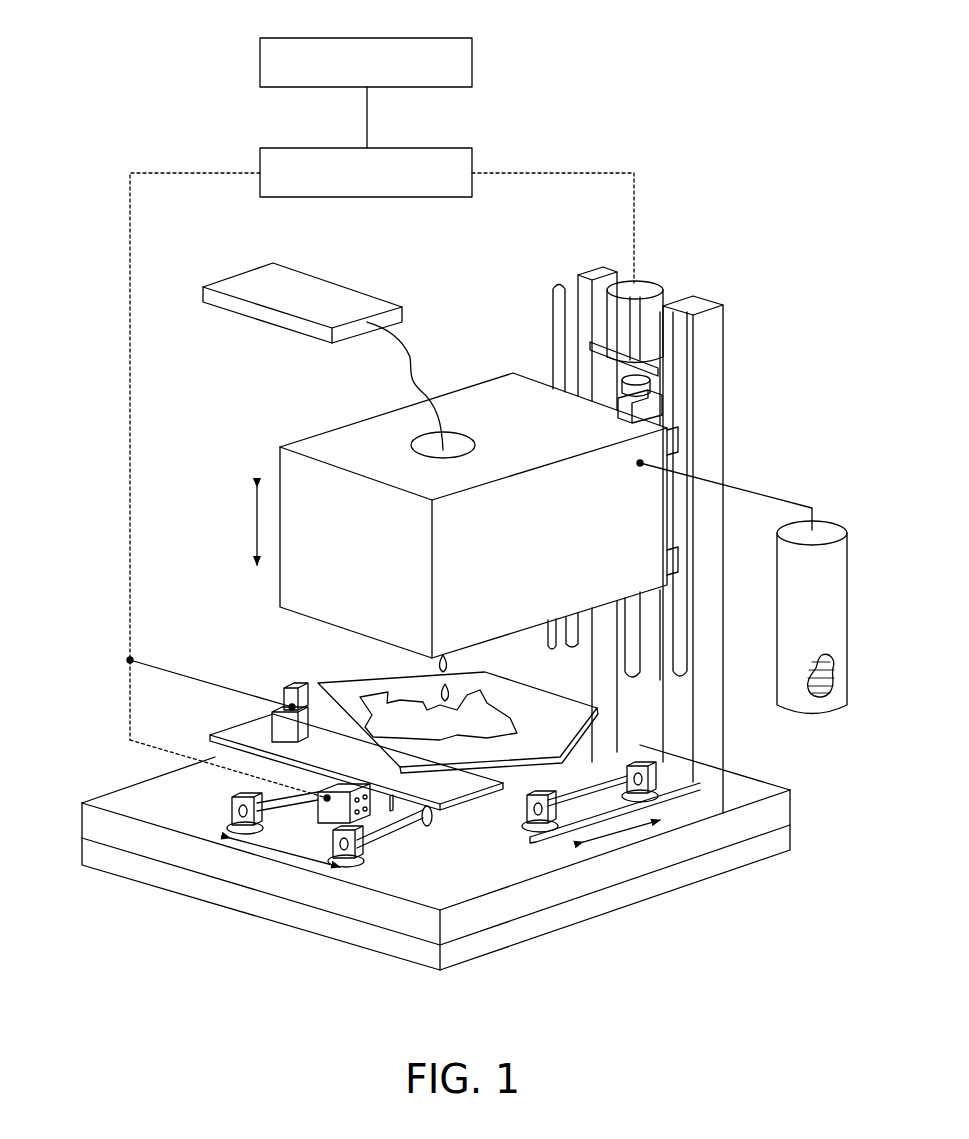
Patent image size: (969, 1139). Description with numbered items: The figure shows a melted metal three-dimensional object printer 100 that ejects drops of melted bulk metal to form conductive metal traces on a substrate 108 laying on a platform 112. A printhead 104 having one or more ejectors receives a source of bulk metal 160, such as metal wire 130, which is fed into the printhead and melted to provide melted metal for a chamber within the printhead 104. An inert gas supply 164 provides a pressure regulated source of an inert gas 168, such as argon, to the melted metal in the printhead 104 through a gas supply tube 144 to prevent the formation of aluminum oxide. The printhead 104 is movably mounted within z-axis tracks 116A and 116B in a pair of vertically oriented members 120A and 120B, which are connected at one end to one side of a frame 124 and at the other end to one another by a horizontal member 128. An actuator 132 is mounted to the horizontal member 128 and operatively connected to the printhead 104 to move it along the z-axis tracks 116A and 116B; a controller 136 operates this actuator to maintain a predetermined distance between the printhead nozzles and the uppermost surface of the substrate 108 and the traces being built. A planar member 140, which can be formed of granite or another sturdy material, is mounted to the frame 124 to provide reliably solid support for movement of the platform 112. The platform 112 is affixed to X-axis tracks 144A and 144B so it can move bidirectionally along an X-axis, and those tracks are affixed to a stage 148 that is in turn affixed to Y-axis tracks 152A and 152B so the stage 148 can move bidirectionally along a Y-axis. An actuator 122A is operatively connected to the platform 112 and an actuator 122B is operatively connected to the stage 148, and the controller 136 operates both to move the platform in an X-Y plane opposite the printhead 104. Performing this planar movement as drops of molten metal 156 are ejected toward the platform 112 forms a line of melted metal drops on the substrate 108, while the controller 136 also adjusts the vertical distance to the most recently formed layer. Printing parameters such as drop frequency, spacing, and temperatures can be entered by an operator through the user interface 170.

The melted metal 3D object printer 100 is at (722, 193).
The printhead 104 is at (350, 437).
The substrate 108 is at (495, 717).
The platform 112 is at (345, 690).
The z-axis track 116A is at (552, 303).
The z-axis track 116B is at (665, 383).
The vertically oriented member 120A is at (553, 349).
The vertically oriented member 120B is at (673, 632).
The actuator 122A is at (288, 706).
The actuator 122B is at (362, 817).
The frame 124 is at (105, 858).
The horizontal member 128 is at (628, 368).
The metal wire 130 is at (410, 357).
The actuator 132 is at (643, 282).
The controller 136 is at (433, 148).
The planar member 140 is at (125, 802).
The gas supply tube 144 is at (770, 495).
The X-axis track 144A is at (273, 797).
The X-axis track 144B is at (397, 823).
The stage 148 is at (247, 728).
The Y-axis track 152A is at (513, 797).
The Y-axis track 152B is at (608, 762).
The drops of molten metal 156 is at (438, 695).
The source of bulk metal 160 is at (328, 290).
The inert gas supply 164 is at (777, 615).
The inert gas 168 is at (825, 695).
The user interface 170 is at (433, 37).